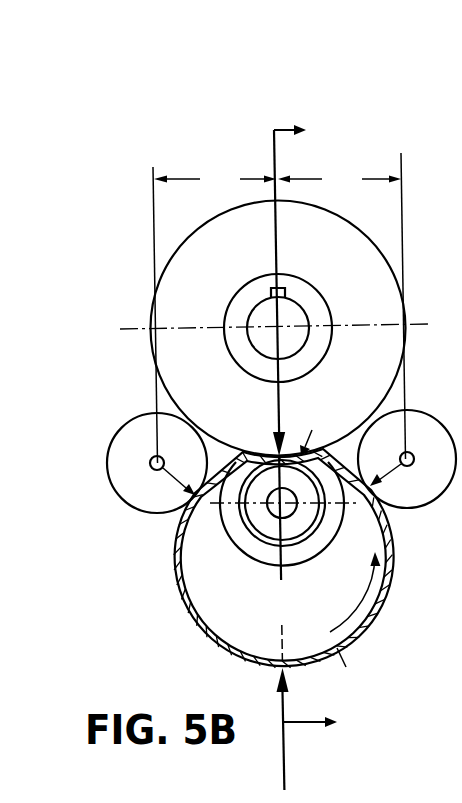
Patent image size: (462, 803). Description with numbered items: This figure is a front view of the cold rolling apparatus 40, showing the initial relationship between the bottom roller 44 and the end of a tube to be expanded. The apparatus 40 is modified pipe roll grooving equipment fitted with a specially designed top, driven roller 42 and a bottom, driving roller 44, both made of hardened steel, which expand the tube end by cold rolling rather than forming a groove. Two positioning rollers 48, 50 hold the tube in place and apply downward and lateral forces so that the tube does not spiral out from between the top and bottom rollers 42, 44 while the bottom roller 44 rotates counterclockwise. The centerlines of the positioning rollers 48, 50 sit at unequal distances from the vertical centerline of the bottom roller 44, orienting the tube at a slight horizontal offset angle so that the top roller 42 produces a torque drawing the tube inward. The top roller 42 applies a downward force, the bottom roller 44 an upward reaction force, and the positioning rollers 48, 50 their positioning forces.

The apparatus 40 is at (250, 440).
The top roller 42 is at (355, 276).
The bottom roller 44 is at (237, 530).
The positioning roller 48 is at (435, 432).
The positioning roller 50 is at (132, 442).